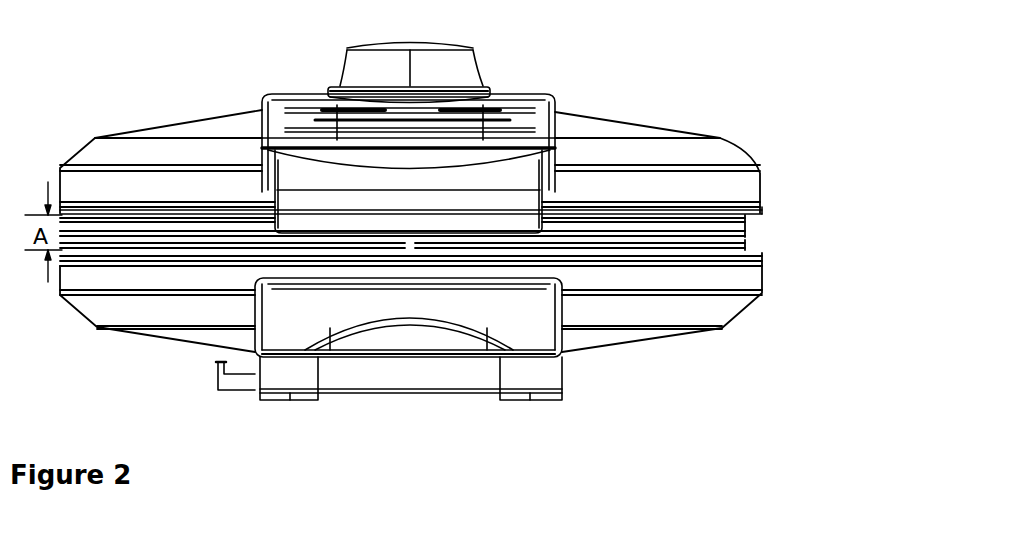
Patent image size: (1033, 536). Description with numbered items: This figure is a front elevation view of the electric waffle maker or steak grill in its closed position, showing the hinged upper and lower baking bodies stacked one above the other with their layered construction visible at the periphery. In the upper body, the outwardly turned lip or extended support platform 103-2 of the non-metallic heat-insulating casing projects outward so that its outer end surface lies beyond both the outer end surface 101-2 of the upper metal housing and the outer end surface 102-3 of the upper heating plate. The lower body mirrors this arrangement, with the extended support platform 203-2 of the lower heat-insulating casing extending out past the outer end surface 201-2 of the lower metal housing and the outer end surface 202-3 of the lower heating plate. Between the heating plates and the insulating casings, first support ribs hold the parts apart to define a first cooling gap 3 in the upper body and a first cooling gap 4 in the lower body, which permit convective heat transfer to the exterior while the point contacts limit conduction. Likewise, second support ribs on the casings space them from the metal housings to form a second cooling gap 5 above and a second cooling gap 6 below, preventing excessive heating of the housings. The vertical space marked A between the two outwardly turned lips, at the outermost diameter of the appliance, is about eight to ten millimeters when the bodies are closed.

The outer end surface of upper metal housing 101-2 is at (764, 187).
The extended support platform 103-2 is at (764, 210).
The outer end surface of upper heating plate 102-3 is at (747, 223).
The outer end surface of lower heating plate 202-3 is at (747, 243).
The extended support platform 203-2 is at (764, 257).
The outer end surface of lower metal housing 201-2 is at (764, 282).
The second cooling gap 5 is at (637, 205).
The first cooling gap 3 is at (677, 217).
The first cooling gap 4 is at (670, 247).
The second cooling gap 6 is at (630, 262).